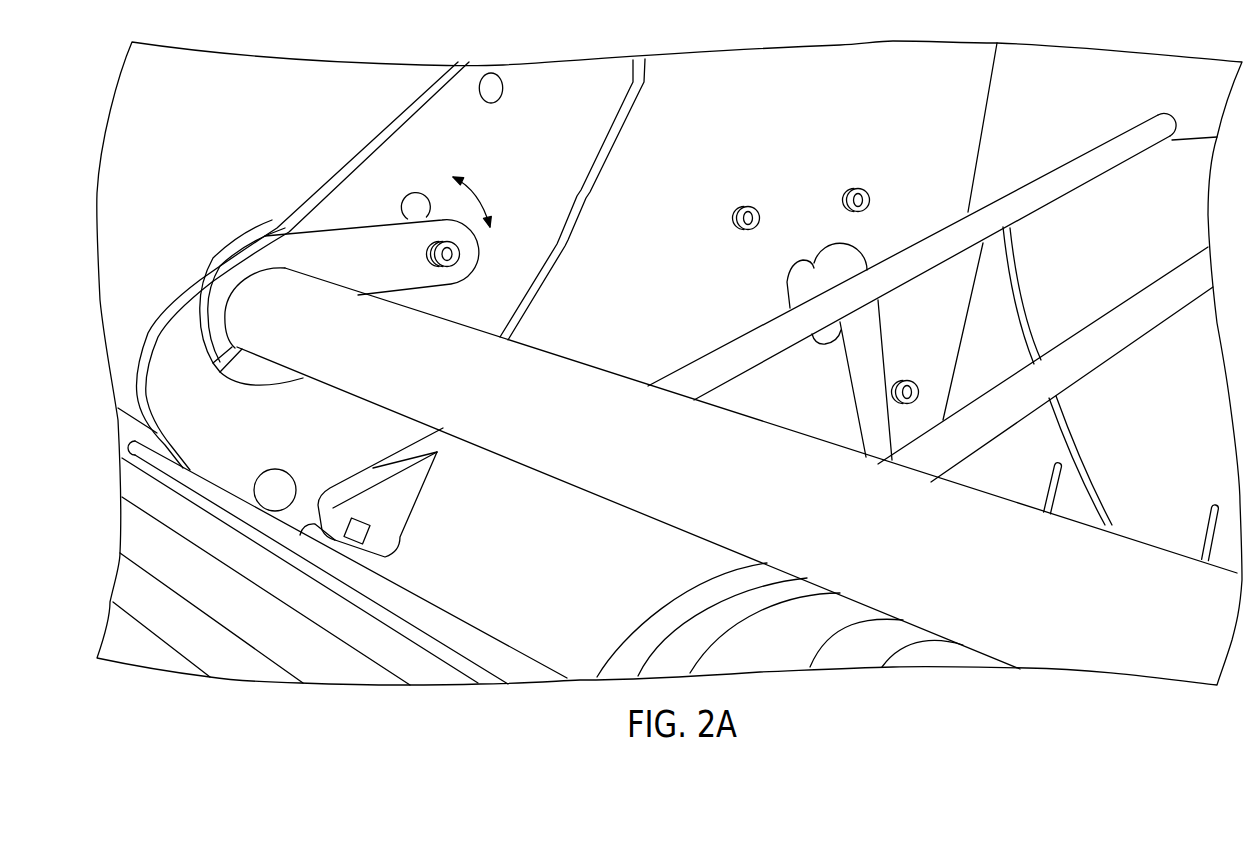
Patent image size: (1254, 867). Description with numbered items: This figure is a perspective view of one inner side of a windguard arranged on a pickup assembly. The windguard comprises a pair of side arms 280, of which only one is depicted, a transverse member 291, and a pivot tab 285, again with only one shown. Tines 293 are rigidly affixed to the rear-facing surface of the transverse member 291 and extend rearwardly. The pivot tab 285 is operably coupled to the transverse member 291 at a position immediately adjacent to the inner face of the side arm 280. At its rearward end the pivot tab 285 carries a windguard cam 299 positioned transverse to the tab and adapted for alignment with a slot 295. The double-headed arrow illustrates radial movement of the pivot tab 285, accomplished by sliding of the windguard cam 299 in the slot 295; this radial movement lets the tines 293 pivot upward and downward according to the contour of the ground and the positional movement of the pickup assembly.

The side arm 280 is at (568, 73).
The pivot tab 285 is at (342, 243).
The transverse member 291 is at (605, 480).
The tines 293 is at (1087, 163).
The slot 295 is at (427, 193).
The windguard cam 299 is at (455, 258).